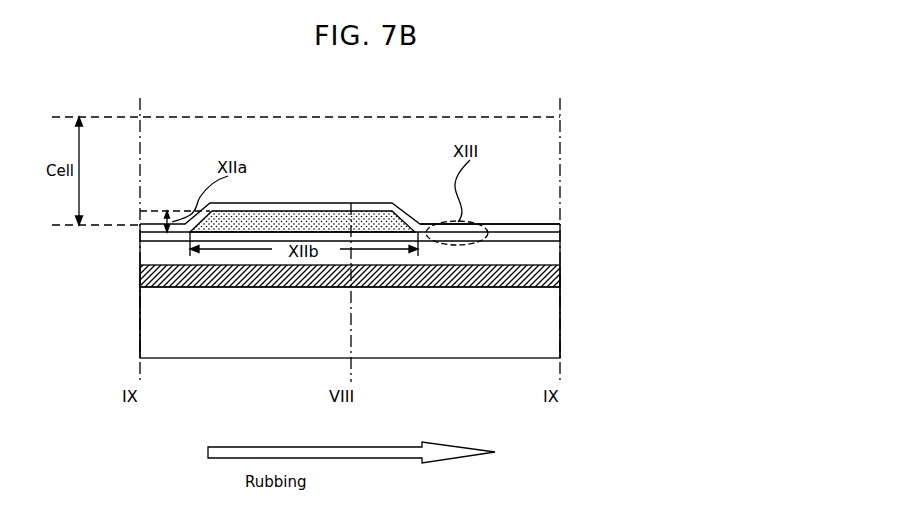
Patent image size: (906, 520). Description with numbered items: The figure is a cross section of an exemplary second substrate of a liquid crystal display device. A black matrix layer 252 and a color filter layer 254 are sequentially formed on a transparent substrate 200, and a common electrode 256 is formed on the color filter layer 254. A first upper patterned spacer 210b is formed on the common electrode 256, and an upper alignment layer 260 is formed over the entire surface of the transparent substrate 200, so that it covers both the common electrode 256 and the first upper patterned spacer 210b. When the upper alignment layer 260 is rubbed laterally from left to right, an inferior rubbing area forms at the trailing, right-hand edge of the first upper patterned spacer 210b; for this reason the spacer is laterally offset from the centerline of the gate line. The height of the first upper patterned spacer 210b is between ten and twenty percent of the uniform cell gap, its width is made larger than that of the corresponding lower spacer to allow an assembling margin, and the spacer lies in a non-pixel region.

The transparent substrate 200 is at (320, 327).
The first upper patterned spacer 210b is at (288, 211).
The black matrix layer 252 is at (558, 277).
The color filter layer 254 is at (548, 253).
The common electrode 256 is at (556, 232).
The upper alignment layer 260 is at (530, 225).